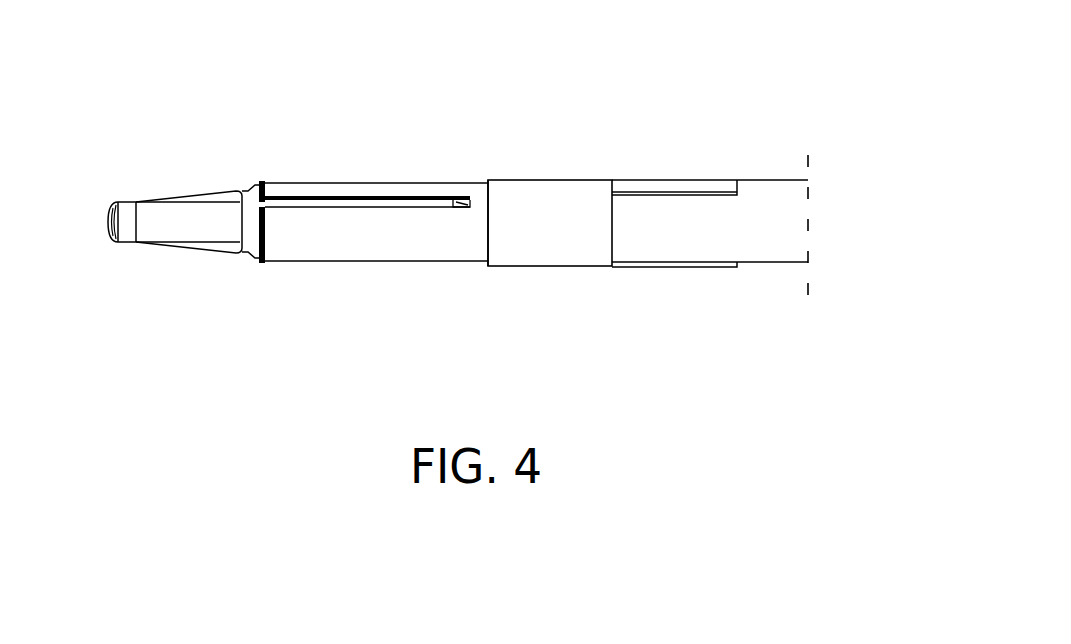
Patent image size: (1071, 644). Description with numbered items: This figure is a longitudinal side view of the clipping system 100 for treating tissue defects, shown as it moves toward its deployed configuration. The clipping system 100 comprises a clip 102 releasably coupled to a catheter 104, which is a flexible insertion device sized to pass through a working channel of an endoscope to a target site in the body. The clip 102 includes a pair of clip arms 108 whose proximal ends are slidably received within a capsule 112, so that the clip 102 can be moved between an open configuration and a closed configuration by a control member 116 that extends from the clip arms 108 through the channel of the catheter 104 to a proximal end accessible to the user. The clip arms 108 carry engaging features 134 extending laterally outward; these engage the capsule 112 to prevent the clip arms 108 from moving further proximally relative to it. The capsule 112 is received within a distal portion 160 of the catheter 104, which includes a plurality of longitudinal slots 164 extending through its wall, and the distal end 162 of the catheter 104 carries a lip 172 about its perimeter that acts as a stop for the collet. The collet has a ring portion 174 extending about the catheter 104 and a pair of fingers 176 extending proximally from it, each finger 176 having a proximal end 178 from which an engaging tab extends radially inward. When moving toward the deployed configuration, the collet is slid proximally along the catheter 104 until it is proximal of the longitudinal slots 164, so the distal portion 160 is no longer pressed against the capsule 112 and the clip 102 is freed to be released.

The clipping system 100 is at (450, 122).
The clip 102 is at (248, 260).
The catheter 104 is at (787, 172).
The clip arms 108 is at (182, 198).
The capsule 112 is at (252, 198).
The control member 116 is at (592, 178).
The engaging features 134 is at (220, 193).
The distal portion 160 is at (398, 255).
The distal end 162 is at (267, 195).
The longitudinal slots 164 is at (353, 196).
The lip 172 is at (267, 237).
The ring portion 174 is at (535, 195).
The fingers 176 is at (675, 182).
The proximal end 178 is at (702, 190).